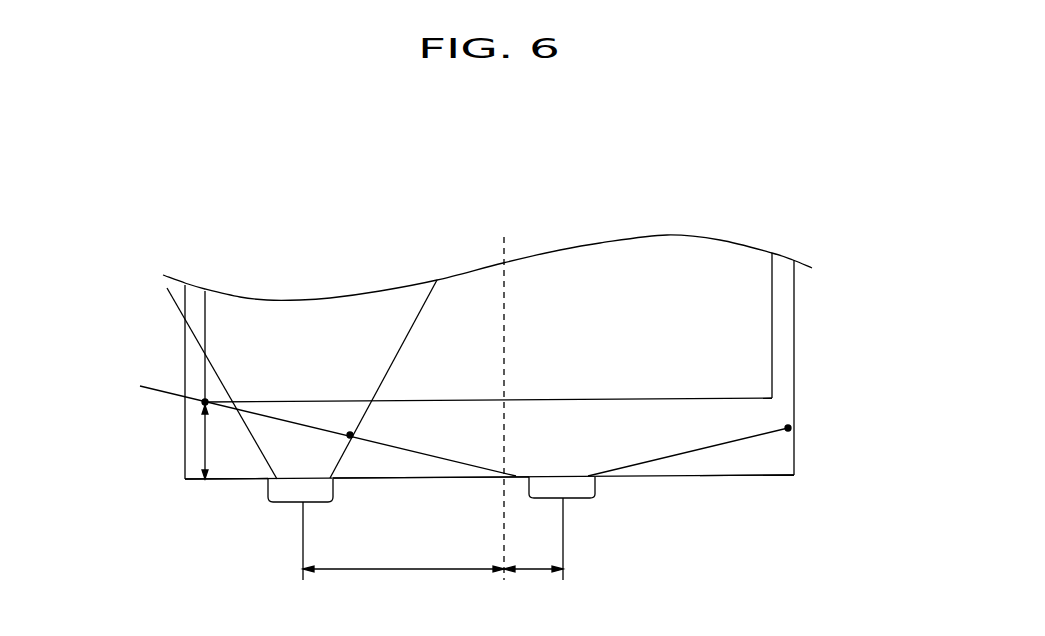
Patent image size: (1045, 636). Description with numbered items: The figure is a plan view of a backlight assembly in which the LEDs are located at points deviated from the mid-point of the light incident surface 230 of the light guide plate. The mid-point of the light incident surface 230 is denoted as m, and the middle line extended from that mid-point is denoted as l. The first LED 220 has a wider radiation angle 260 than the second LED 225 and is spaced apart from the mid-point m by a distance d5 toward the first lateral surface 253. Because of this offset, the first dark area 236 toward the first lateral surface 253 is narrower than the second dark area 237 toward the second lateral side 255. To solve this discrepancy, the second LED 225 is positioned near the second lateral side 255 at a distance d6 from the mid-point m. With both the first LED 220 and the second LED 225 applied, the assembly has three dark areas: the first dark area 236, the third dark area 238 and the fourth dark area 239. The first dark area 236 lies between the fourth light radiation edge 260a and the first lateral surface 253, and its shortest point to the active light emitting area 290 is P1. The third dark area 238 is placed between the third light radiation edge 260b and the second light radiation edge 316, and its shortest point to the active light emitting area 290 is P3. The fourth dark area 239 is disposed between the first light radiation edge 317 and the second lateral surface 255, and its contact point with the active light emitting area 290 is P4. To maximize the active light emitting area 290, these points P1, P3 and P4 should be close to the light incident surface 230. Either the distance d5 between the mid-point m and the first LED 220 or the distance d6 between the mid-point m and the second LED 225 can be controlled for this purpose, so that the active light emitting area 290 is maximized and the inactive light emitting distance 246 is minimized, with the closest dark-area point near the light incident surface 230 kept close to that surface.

The second light radiation edge 316 is at (413, 318).
The first light radiation edge 317 is at (173, 302).
The second lateral side 255 is at (185, 352).
The first lateral surface 253 is at (795, 362).
The active light emitting area 290 is at (737, 312).
The radiation angle 260 is at (630, 463).
The fourth light radiation edge 260a is at (791, 430).
The third light radiation edge 260b is at (150, 388).
The inactive light emitting distance 246 is at (229, 440).
The fourth dark area 239 is at (222, 472).
The second LED 225 is at (285, 495).
The second dark area 237 is at (382, 461).
The third dark area 238 is at (432, 470).
The first LED 220 is at (577, 488).
The light incident surface 230 is at (690, 477).
The first dark area 236 is at (760, 468).
The shortest point of first dark area to active light emitting area P1 is at (797, 429).
The shortest point of third dark area to active light emitting area P3 is at (418, 423).
The contact point of fourth dark area to active light emitting area P4 is at (205, 403).
The mid-point of light incident surface m is at (490, 485).
The middle line l is at (496, 228).
The distance between mid-point and first LED d5 is at (533, 550).
The distance between mid-point and second LED d6 is at (403, 552).